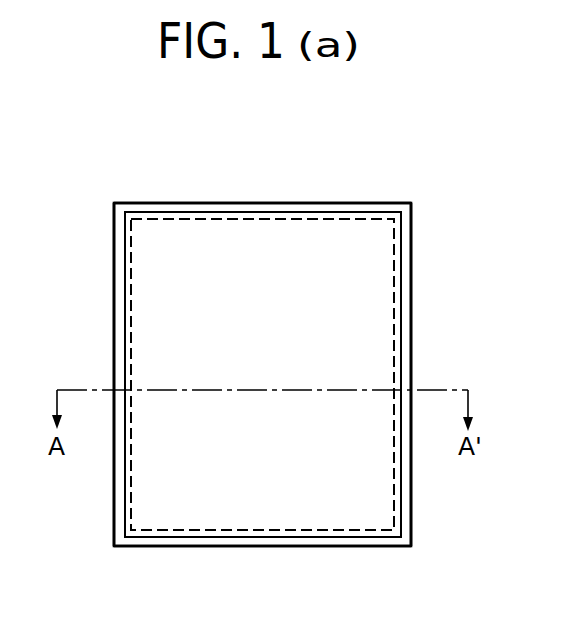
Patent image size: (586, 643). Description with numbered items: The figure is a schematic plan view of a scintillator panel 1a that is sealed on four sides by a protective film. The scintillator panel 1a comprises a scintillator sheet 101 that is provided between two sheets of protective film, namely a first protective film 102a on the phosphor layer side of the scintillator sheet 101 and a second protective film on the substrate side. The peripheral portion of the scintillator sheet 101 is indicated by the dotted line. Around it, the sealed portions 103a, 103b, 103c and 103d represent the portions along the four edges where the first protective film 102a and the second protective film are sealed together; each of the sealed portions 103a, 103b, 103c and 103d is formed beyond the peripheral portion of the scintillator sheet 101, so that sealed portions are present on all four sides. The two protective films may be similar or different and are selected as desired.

The scintillator panel 1a is at (386, 185).
The scintillator sheet 101 is at (124, 492).
The first protective film 102a is at (170, 318).
The sealed portion 103a is at (147, 204).
The sealed portion 103b is at (408, 316).
The sealed portion 103c is at (180, 546).
The sealed portion 103d is at (116, 367).